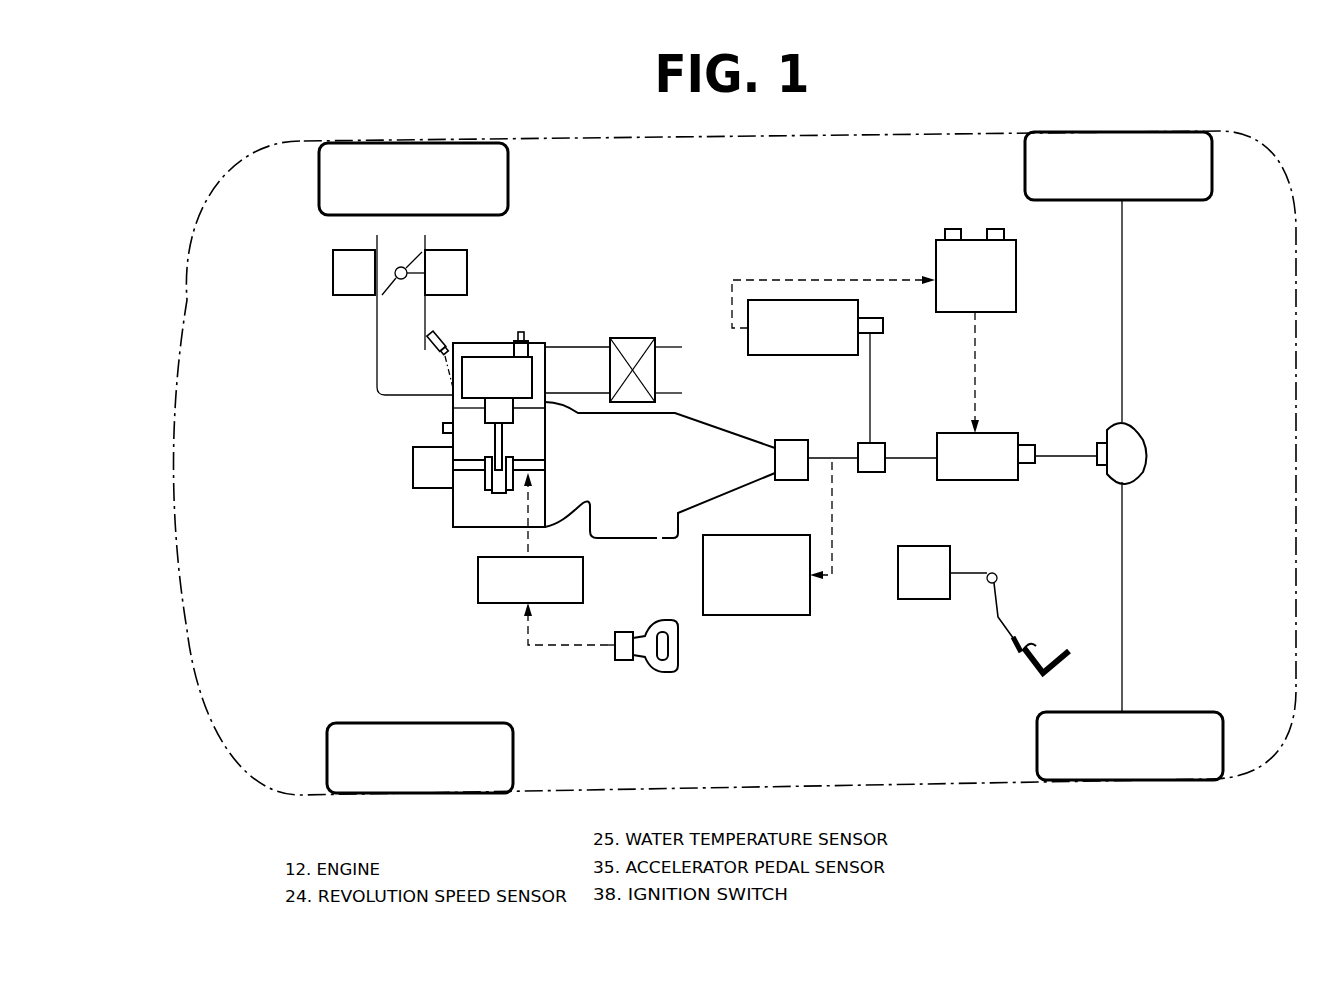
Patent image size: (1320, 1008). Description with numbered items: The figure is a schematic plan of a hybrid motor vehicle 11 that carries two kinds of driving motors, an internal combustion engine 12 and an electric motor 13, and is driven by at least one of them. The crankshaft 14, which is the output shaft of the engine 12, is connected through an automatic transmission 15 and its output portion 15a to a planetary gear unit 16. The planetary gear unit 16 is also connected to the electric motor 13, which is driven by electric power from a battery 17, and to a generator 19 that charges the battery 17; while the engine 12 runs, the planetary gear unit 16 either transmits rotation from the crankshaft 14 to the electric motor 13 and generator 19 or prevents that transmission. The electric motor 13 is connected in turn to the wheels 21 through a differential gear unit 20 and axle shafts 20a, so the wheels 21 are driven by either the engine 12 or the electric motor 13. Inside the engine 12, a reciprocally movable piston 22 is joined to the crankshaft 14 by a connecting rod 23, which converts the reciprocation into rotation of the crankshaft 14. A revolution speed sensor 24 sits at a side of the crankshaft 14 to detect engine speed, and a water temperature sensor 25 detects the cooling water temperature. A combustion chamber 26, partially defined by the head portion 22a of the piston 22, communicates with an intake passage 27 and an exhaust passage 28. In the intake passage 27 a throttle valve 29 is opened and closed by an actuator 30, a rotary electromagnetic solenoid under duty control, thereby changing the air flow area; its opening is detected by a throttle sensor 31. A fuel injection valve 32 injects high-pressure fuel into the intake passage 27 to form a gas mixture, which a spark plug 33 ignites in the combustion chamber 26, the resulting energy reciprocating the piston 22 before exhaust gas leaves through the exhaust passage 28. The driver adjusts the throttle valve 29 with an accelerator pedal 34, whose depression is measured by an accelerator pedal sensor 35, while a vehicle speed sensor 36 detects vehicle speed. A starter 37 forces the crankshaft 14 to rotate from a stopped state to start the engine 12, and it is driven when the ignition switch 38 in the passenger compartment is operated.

The motor vehicle 11 is at (735, 491).
The internal combustion engine 12 is at (521, 290).
The electric motor 13 is at (975, 480).
The crankshaft 14 is at (468, 476).
The automatic transmission 15 is at (722, 430).
The transmission output shaft 15a is at (815, 460).
The planetary gear unit 16 is at (870, 472).
The battery 17 is at (1016, 275).
The generator 19 is at (802, 355).
The differential gear unit 20 is at (1143, 456).
The axle shafts 20a is at (1122, 305).
The wheels 21 is at (508, 175).
The piston 22 is at (513, 418).
The head portion 22a is at (453, 410).
The connecting rod 23 is at (512, 453).
The revolution speed sensor 24 is at (413, 466).
The water temperature sensor 25 is at (443, 428).
The combustion chamber 26 is at (535, 375).
The intake passage 27 is at (377, 320).
The exhaust passage 28 is at (593, 352).
The throttle valve 29 is at (388, 294).
The actuator 30 is at (452, 248).
The throttle sensor 31 is at (348, 244).
The fuel injection valve 32 is at (450, 333).
The spark plug 33 is at (522, 330).
The accelerator pedal 34 is at (1018, 648).
The accelerator pedal sensor 35 is at (915, 600).
The vehicle speed sensor 36 is at (748, 615).
The starter 37 is at (478, 578).
The ignition switch 38 is at (624, 660).